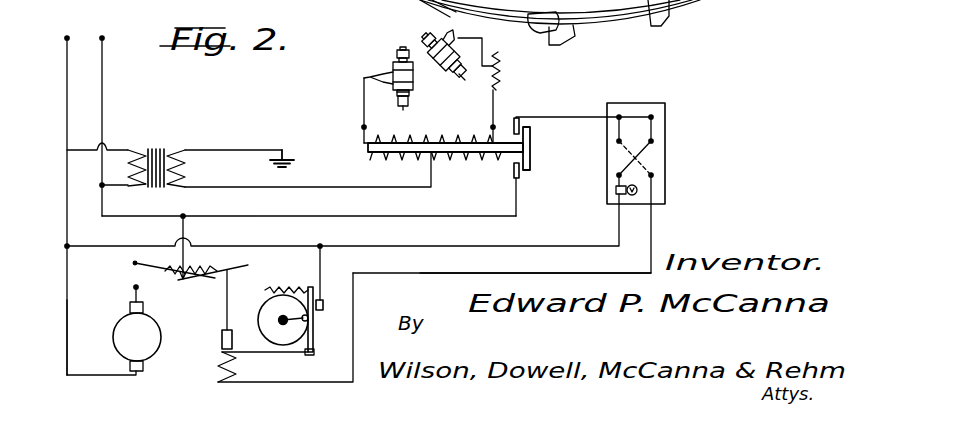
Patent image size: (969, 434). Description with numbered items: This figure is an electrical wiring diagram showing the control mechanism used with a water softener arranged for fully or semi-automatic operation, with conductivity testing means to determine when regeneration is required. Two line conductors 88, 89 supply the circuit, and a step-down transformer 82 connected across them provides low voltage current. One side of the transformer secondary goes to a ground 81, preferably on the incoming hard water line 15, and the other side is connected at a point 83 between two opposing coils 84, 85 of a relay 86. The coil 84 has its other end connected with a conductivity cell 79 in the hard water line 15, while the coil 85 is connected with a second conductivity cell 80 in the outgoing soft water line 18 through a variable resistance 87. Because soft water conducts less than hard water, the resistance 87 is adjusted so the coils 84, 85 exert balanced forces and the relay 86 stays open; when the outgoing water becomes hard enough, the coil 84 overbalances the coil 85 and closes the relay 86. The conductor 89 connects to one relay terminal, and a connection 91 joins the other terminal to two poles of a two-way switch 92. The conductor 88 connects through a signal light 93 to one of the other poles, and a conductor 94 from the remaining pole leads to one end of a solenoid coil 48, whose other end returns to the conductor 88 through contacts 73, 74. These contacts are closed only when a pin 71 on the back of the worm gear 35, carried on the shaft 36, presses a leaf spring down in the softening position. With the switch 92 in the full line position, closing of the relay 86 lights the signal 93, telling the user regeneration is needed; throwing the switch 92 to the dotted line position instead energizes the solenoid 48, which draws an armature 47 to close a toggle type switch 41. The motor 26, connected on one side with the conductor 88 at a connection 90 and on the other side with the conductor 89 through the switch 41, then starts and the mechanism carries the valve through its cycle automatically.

The line conductor 88 is at (67, 100).
The line conductor 89 is at (103, 100).
The step-down transformer 82 is at (161, 146).
The ground 81 is at (284, 148).
The conductivity cell 79 is at (390, 74).
The conductivity cell 80 is at (455, 37).
The incoming hard water line 15 is at (411, 100).
The outgoing soft water line 18 is at (455, 87).
The variable resistance 87 is at (499, 76).
The coil 84 is at (387, 141).
The coil 85 is at (476, 142).
The connection point 83 is at (432, 160).
The relay 86 is at (530, 150).
The connection 91 is at (563, 116).
The two-way switch 92 is at (654, 159).
The signal light 93 is at (633, 196).
The conductor 94 is at (582, 272).
The connection 90 is at (67, 307).
The toggle type switch 41 is at (192, 283).
The motor 26 is at (159, 330).
The armature 47 is at (218, 343).
The solenoid coil 48 is at (215, 368).
The worm gear 35 is at (258, 312).
The pin 71 is at (280, 313).
The shaft 36 is at (287, 328).
The contact 73 is at (314, 336).
The contact 74 is at (323, 305).